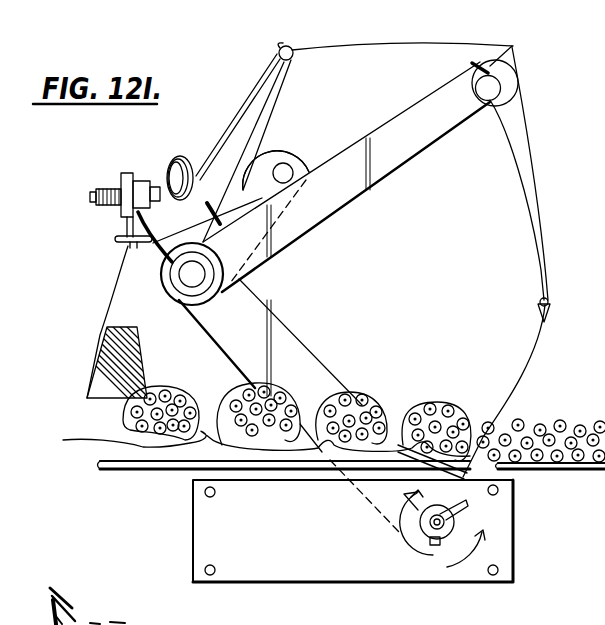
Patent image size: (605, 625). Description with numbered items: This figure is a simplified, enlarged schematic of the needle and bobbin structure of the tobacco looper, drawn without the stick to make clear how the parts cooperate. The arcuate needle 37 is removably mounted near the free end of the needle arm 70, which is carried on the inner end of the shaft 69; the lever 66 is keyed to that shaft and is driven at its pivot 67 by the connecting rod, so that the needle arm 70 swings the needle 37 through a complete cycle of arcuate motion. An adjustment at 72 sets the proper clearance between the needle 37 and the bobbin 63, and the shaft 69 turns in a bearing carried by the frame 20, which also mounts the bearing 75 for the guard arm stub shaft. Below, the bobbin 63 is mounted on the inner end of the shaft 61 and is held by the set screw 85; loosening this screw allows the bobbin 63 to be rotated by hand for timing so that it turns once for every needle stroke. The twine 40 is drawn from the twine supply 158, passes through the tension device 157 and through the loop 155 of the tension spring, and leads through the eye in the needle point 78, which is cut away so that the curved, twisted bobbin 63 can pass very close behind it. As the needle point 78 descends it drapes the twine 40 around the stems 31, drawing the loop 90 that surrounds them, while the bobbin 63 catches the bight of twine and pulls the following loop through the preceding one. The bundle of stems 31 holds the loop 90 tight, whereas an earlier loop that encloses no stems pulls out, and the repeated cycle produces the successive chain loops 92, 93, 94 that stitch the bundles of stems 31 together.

The frame 20 is at (291, 334).
The stems 31 is at (258, 395).
The arcuate needle 37 is at (518, 150).
The twine 40 is at (438, 46).
The shaft 61 is at (404, 526).
The bobbin 63 is at (468, 498).
The lever 66 is at (280, 152).
The pivot 67 is at (290, 168).
The shaft 69 is at (199, 272).
The needle arm 70 is at (404, 166).
The needle clearance adjustment 72 is at (466, 92).
The bearing 75 is at (588, 470).
The needle point 78 is at (553, 298).
The set screw 85 is at (430, 552).
The loop 90 is at (162, 388).
The loop 92 is at (245, 387).
The loop 93 is at (330, 397).
The loop 94 is at (427, 402).
The loop 155 is at (288, 46).
The tension device 157 is at (127, 175).
The twine supply 158 is at (240, 108).